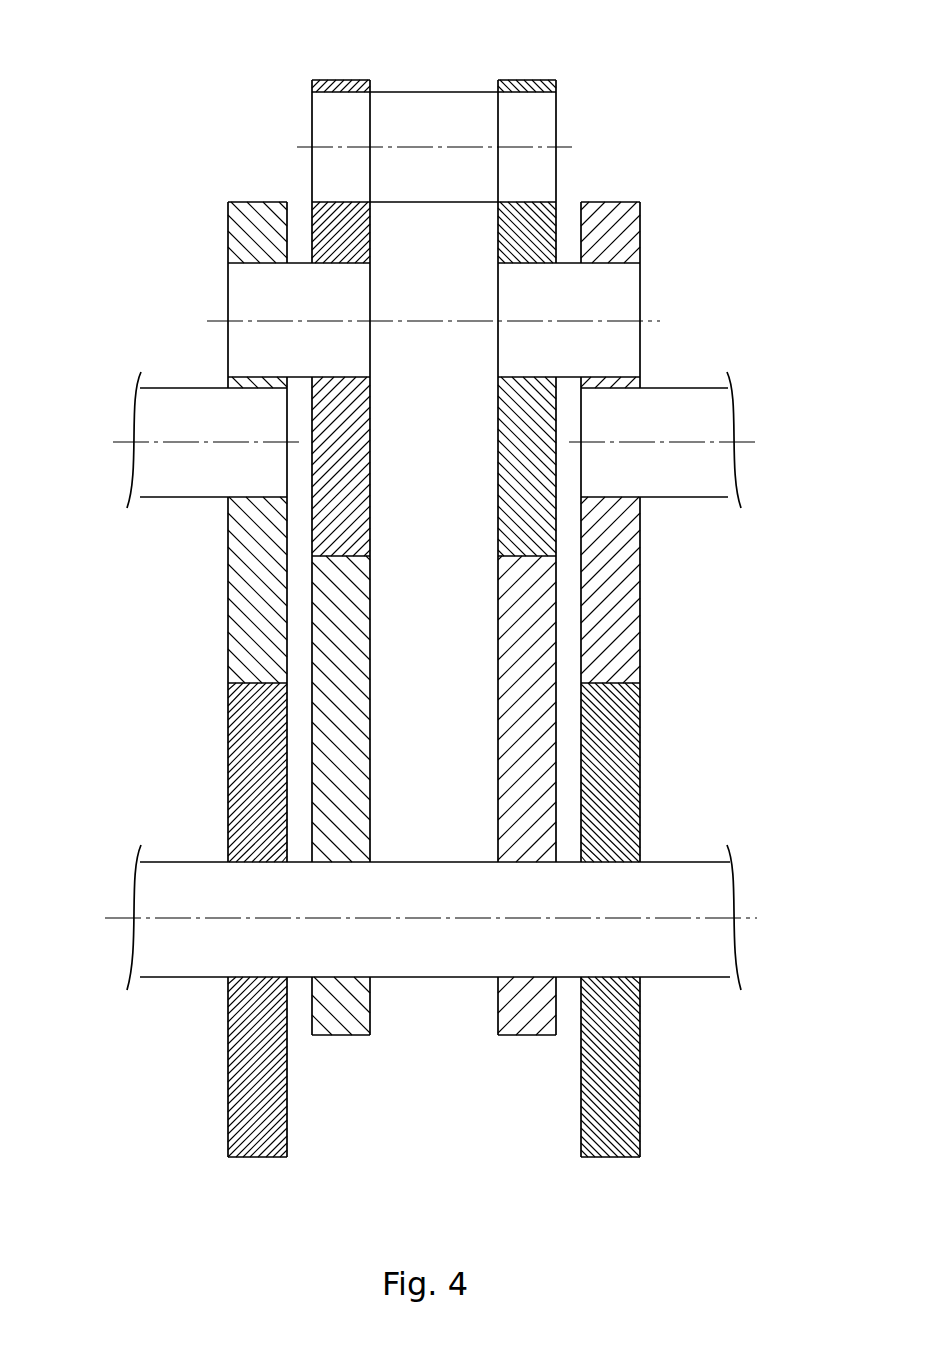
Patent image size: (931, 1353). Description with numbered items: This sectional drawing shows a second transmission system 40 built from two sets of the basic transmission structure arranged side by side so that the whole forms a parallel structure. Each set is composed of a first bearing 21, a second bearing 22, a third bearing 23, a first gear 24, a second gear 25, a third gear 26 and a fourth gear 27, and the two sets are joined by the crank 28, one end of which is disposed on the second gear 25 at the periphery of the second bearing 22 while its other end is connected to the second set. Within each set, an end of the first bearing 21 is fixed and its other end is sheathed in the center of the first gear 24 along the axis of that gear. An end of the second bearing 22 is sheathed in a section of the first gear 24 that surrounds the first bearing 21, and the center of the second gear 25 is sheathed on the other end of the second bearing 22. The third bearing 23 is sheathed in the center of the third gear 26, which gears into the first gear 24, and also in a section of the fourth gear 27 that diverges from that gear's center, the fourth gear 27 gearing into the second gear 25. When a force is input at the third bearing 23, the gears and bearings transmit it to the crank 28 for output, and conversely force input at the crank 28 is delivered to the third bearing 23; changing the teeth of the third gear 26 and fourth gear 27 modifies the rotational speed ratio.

The transmission system 40 is at (170, 134).
The crank 28 is at (417, 108).
The second bearing 22 is at (522, 307).
The first bearing 21 is at (152, 417).
The second gear 25 is at (343, 467).
The first gear 24 is at (243, 618).
The third gear 26 is at (238, 760).
The fourth gear 27 is at (347, 737).
The third bearing 23 is at (438, 945).